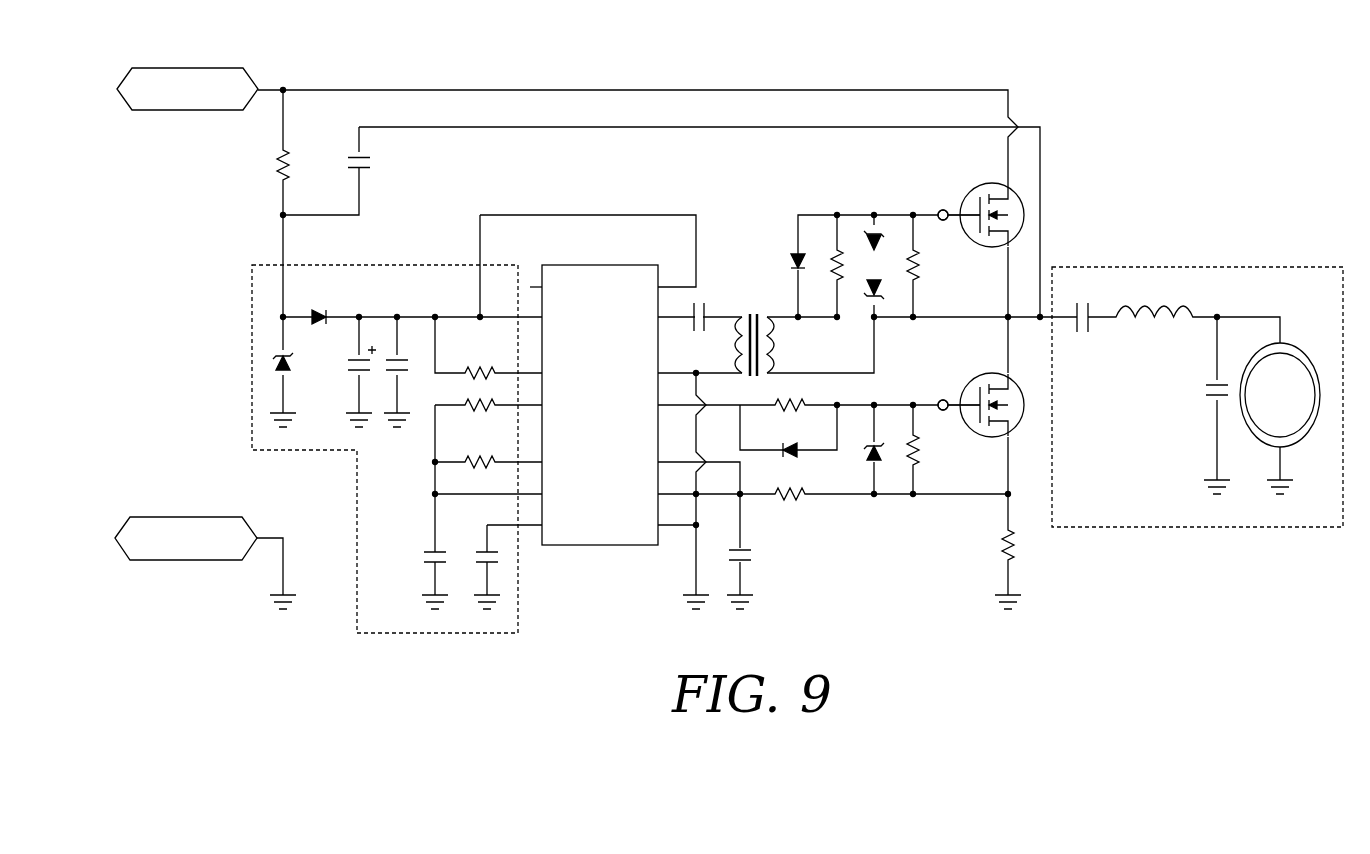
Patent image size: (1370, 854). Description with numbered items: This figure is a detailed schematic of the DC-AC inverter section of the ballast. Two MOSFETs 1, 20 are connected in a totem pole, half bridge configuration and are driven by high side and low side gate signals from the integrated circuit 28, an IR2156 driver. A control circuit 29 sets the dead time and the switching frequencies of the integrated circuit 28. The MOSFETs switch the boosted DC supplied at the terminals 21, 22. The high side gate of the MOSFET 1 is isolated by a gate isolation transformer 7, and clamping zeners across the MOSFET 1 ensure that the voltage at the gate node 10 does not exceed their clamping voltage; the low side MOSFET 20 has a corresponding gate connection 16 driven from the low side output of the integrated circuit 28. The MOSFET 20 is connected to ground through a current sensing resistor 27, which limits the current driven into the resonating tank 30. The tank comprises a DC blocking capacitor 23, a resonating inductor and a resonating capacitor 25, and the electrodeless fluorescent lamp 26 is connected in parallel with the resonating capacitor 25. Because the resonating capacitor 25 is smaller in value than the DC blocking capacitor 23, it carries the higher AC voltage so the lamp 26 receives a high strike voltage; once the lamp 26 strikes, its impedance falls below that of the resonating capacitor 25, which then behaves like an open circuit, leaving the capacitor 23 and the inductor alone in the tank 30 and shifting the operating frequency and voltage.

The terminal 21 is at (283, 88).
The terminal 22 is at (281, 538).
The control circuit 29 is at (388, 265).
The integrated circuit 28 is at (600, 264).
The gate isolation transformer 7 is at (755, 315).
The MOSFET 1 is at (1022, 208).
The high side gate node 10 is at (945, 209).
The MOSFET 20 is at (1022, 393).
The gate of low-side transistor 16 is at (945, 399).
The current sensing resistor 27 is at (1001, 535).
The resonating tank 30 is at (1200, 266).
The DC blocking capacitor 23 is at (1080, 302).
The resonating capacitor 25 is at (1205, 389).
The electrodeless fluorescent lamp 26 is at (1305, 348).